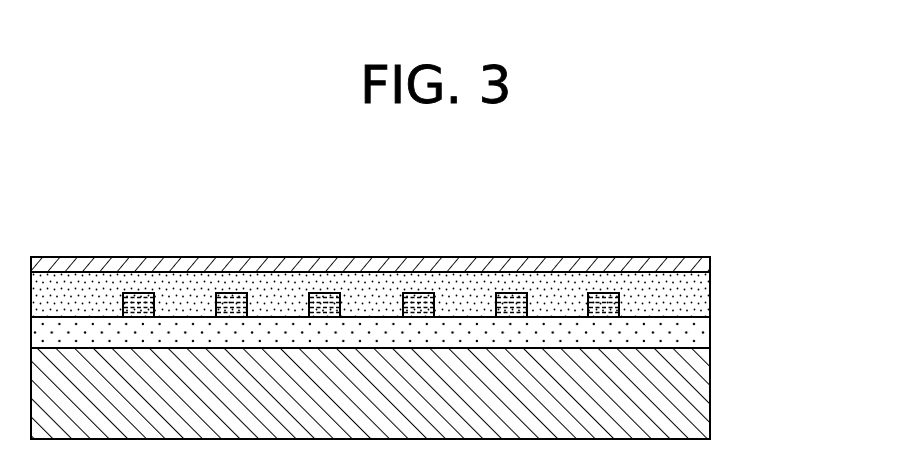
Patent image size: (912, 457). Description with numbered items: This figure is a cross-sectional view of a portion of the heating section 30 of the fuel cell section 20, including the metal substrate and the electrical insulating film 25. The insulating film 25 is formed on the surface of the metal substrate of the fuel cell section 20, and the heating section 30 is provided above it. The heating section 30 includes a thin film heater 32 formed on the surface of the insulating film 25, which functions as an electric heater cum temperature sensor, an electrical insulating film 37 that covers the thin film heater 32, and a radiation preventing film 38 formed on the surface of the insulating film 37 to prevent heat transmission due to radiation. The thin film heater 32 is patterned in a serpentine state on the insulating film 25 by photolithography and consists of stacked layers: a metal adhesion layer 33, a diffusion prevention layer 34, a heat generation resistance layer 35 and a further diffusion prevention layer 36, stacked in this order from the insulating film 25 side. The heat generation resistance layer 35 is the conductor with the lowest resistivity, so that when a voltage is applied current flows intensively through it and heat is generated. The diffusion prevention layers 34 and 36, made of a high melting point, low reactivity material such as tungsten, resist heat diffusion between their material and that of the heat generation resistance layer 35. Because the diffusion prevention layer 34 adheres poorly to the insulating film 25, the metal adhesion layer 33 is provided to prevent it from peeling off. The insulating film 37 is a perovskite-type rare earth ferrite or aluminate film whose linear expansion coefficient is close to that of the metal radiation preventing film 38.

The fuel cell section 20 is at (680, 397).
The electrical insulating film 25 is at (685, 338).
The heating section 30 is at (461, 249).
The thin film heater 32 is at (428, 282).
The metal adhesion layer 33 is at (398, 327).
The diffusion prevention layer 34 is at (620, 303).
The heat generation resistance layer 35 is at (710, 270).
The diffusion prevention layer 36 is at (620, 299).
The electrical insulating film 37 is at (607, 282).
The radiation preventing film 38 is at (612, 263).